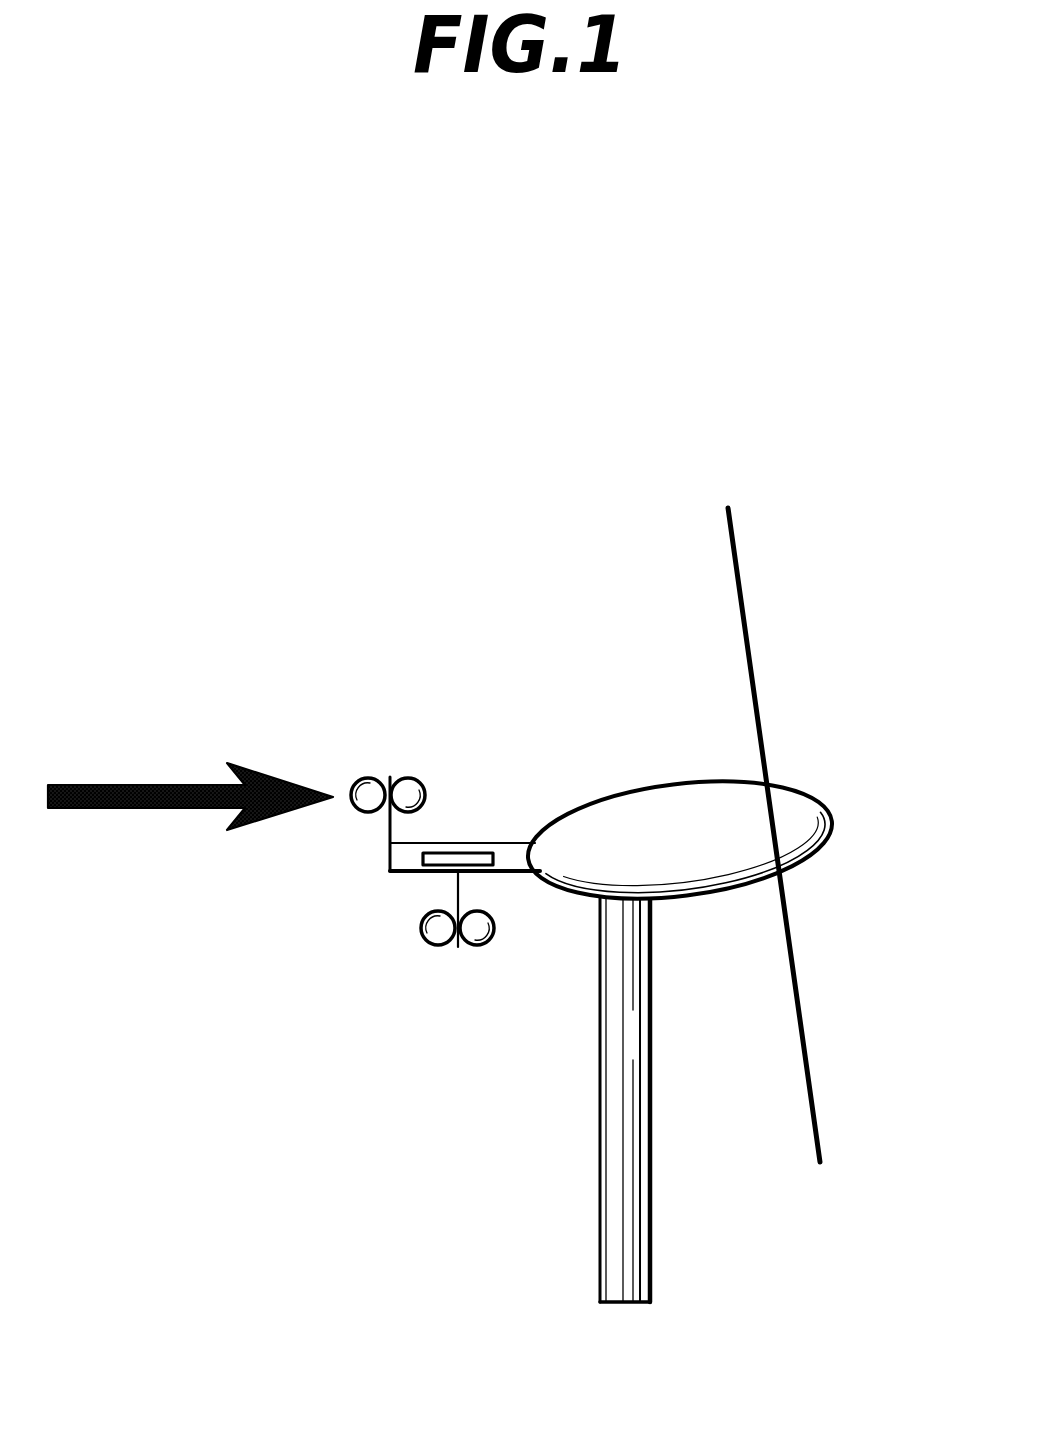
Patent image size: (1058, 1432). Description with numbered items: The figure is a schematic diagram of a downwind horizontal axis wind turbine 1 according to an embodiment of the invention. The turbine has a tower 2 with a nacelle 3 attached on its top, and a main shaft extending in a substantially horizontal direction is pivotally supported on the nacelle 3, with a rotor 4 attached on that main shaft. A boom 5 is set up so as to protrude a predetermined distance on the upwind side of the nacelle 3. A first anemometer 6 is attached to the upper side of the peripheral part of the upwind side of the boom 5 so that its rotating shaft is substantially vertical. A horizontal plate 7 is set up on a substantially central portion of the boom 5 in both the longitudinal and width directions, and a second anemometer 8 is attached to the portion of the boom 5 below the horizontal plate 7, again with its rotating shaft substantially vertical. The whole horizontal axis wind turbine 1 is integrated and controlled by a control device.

The horizontal axis wind turbine 1 is at (557, 1097).
The tower 2 is at (640, 1175).
The nacelle 3 is at (633, 812).
The rotor 4 is at (760, 722).
The boom 5 is at (507, 850).
The first anemometer 6 is at (410, 772).
The horizontal plate 7 is at (460, 853).
The second anemometer 8 is at (423, 933).